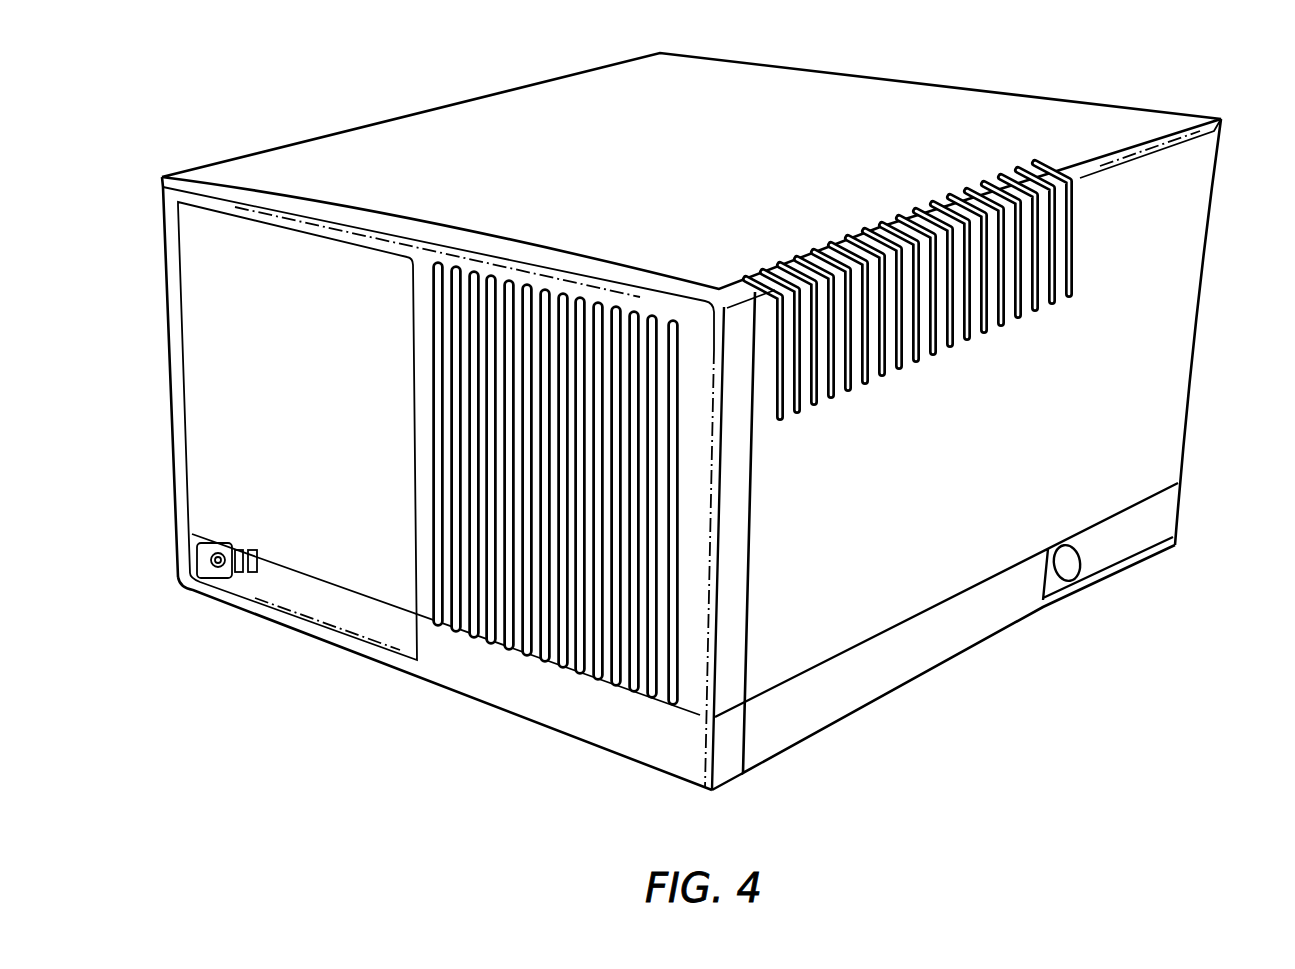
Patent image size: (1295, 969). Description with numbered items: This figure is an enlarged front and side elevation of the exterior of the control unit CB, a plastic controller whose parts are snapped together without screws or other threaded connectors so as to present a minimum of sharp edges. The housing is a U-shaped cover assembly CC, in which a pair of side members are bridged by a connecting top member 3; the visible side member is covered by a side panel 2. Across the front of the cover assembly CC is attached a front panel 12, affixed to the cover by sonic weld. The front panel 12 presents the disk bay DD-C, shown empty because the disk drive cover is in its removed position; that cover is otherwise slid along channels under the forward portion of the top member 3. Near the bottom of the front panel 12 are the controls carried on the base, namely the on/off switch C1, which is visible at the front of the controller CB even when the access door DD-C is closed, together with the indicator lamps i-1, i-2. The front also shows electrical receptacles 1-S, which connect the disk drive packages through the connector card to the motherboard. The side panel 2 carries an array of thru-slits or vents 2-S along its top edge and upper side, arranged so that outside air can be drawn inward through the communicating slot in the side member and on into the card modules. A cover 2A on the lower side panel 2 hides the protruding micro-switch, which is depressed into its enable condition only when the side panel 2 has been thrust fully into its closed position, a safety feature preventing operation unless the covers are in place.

The connecting top member 3 is at (672, 164).
The control unit CB is at (1003, 80).
The U-shaped cover assembly CC is at (1150, 117).
The side panel 2 is at (960, 478).
The thru-slits or vents 2-S is at (1035, 300).
The cover 2A is at (1160, 522).
The disk bay / access-door DD-C is at (313, 424).
The electrical receptacles 1-S is at (650, 700).
The front panel 12 is at (452, 690).
The on/off switch / SCSI bus activity indicator LED C1 is at (212, 568).
The indicator lamp i-1 is at (238, 575).
The indicator lamp i-2 is at (257, 575).